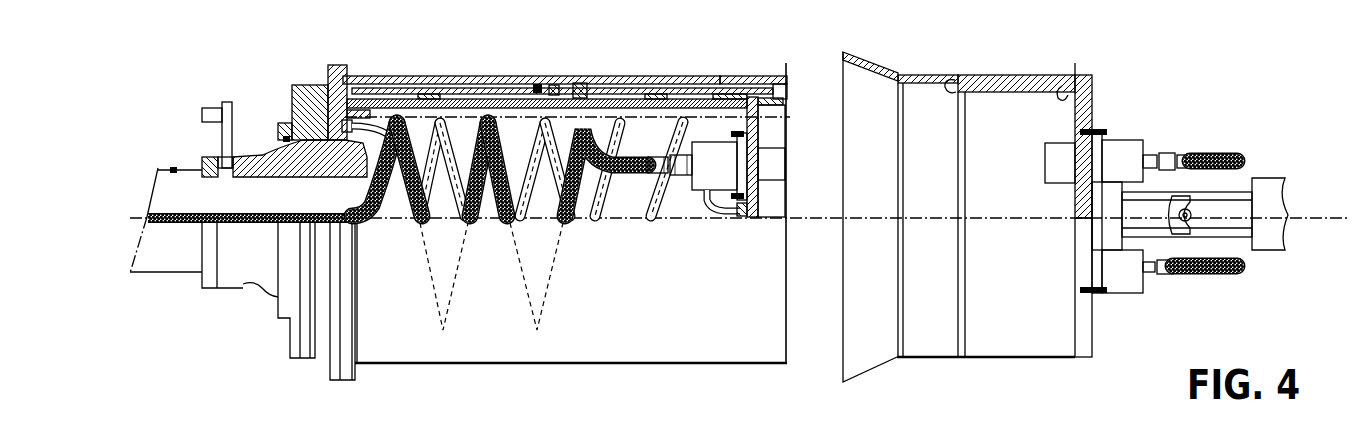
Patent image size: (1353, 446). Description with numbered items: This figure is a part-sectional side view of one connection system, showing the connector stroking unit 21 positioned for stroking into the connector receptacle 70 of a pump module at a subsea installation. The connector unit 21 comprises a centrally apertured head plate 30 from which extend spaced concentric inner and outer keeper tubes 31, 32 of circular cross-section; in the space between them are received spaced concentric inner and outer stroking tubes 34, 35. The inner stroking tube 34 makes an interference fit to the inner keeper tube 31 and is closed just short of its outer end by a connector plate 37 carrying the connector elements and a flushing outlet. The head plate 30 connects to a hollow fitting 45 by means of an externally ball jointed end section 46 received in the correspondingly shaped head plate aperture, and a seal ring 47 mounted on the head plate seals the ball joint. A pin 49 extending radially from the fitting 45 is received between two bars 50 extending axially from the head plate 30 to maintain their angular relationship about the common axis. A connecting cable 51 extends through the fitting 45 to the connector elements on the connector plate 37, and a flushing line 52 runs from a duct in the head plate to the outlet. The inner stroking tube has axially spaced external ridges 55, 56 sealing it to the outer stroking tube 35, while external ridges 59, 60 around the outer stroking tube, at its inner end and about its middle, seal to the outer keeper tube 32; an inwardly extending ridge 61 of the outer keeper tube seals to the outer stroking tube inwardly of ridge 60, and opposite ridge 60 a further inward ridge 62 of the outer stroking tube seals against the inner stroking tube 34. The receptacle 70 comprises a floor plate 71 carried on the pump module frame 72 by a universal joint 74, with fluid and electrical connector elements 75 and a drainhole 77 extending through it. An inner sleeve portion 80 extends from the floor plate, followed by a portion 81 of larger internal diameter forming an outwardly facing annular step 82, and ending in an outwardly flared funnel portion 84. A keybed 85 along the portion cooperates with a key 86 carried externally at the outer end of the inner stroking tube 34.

The connector unit 21 is at (445, 363).
The head plate 30 is at (298, 333).
The inner keeper tube 31 is at (687, 99).
The outer keeper tube 32 is at (725, 76).
The inner stroking tube 34 is at (493, 77).
The outer stroking tube 35 is at (390, 88).
The connector plate 37 is at (758, 122).
The hollow fitting 45 is at (227, 268).
The ball jointed end section 46 is at (283, 123).
The seal ring 47 is at (277, 310).
The pin 49 is at (227, 138).
The bars 50 is at (213, 110).
The cable 51 is at (501, 207).
The flushing line 52 is at (612, 222).
The external ridge 55 is at (422, 94).
The external ridge 56 is at (662, 94).
The external ridge 59 is at (343, 65).
The external ridge 60 is at (590, 83).
The inwardly extending ridge 61 is at (535, 84).
The ridge 62 is at (554, 85).
The connector receptacle 70 is at (1003, 357).
The floor plate 71 is at (1093, 113).
The pump module frame 72 is at (1270, 193).
The universal joint 74 is at (1183, 200).
The fluid and electrical connector elements 75 is at (1132, 172).
The drainhole 77 is at (1085, 325).
The inner sleeve portion 80 is at (1045, 75).
The portion of larger internal diameter 81 is at (917, 75).
The annular step 82 is at (958, 75).
The funnel portion 84 is at (866, 63).
The keybed 85 is at (1082, 74).
The key 86 is at (760, 94).